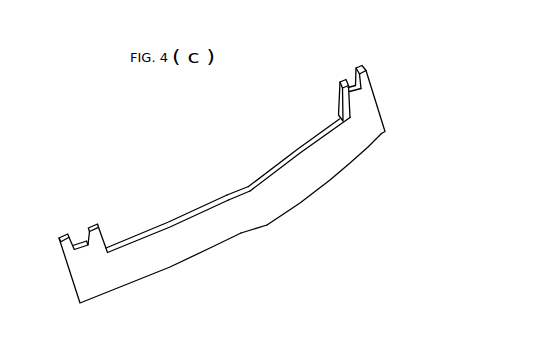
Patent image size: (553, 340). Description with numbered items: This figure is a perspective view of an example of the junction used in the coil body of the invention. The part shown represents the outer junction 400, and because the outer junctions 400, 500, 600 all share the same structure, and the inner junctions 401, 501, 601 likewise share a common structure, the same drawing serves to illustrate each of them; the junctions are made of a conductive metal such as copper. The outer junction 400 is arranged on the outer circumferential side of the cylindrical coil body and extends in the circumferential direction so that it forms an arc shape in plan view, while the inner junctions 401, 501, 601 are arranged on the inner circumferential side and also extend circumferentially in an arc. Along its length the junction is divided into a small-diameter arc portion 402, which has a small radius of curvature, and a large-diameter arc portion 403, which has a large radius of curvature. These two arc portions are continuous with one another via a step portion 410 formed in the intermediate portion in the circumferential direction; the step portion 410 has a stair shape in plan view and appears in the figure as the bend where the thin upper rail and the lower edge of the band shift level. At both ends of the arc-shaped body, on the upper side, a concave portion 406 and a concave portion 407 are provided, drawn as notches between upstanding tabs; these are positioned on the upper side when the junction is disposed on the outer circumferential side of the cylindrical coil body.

The outer junction 400 is at (192, 281).
The inner junction 401 is at (280, 324).
The outer junction 500 is at (343, 324).
The inner junction 501 is at (407, 324).
The outer junction 600 is at (470, 324).
The inner junction 601 is at (265, 168).
The small-diameter arc portion 402 is at (135, 260).
The large-diameter arc portion 403 is at (312, 167).
The concave portion 406 is at (83, 237).
The concave portion 407 is at (347, 80).
The step portion 410 is at (231, 176).